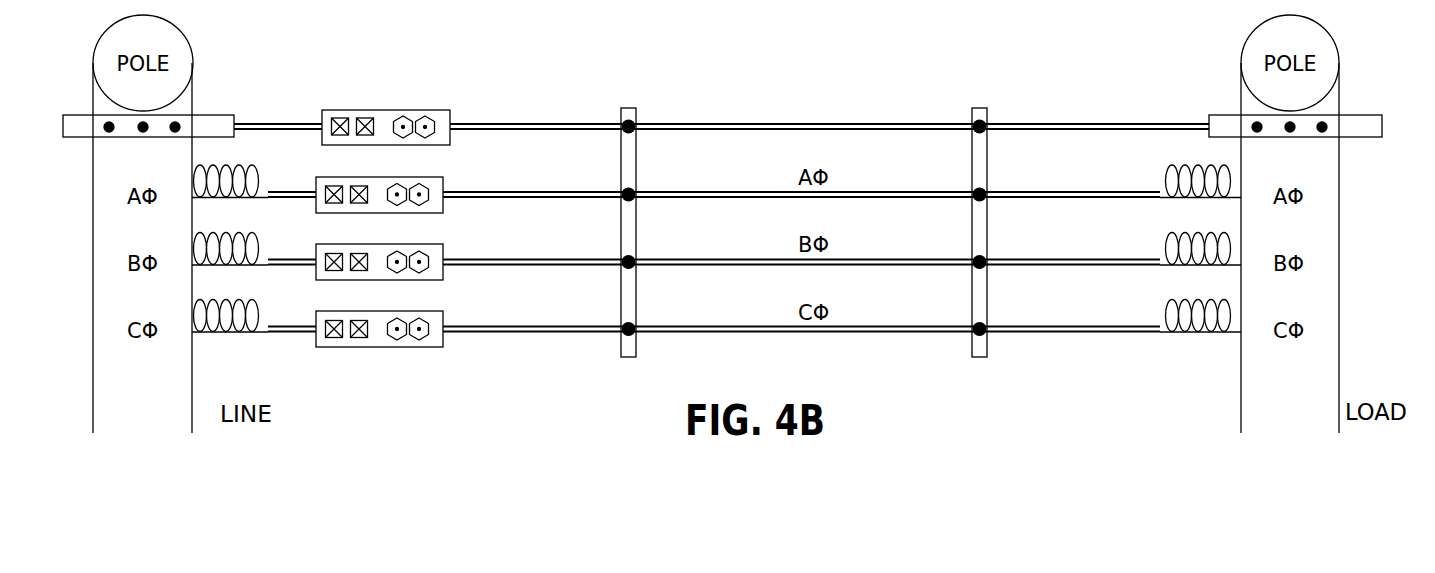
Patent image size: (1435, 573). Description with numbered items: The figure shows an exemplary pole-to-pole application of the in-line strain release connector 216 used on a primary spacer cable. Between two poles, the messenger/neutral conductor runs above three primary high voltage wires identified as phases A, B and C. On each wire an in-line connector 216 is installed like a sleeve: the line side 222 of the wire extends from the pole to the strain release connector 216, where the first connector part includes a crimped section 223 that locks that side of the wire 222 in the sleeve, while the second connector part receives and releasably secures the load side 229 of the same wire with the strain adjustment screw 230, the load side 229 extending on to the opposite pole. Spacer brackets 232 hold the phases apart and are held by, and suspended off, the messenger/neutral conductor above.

The in-line connector 216 is at (412, 248).
The line side of the wire 222 is at (268, 118).
The crimped section 223 is at (332, 338).
The load side of the wire 229 is at (1052, 120).
The strain adjustment screw 230 is at (423, 340).
The spacer brackets 232 is at (633, 230).